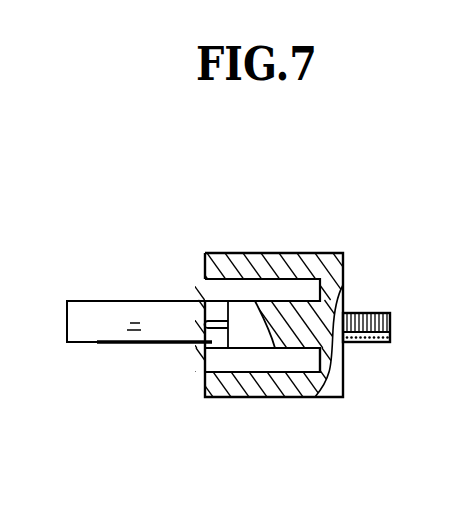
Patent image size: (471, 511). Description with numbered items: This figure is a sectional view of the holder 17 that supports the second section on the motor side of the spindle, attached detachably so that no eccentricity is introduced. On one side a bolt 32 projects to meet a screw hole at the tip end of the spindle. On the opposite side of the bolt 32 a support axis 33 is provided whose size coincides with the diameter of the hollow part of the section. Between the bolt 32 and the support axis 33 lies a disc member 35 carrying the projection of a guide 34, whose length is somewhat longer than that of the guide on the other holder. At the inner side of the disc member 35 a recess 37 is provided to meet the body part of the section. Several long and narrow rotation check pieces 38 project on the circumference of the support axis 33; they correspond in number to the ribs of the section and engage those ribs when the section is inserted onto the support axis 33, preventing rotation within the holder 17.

The holder 17 is at (123, 292).
The bolt 32 is at (350, 307).
The support axis 33 is at (117, 325).
The guide 34 is at (250, 263).
The disc member 35 is at (340, 372).
The recess 37 is at (225, 362).
The rotation check pieces 38 is at (210, 320).